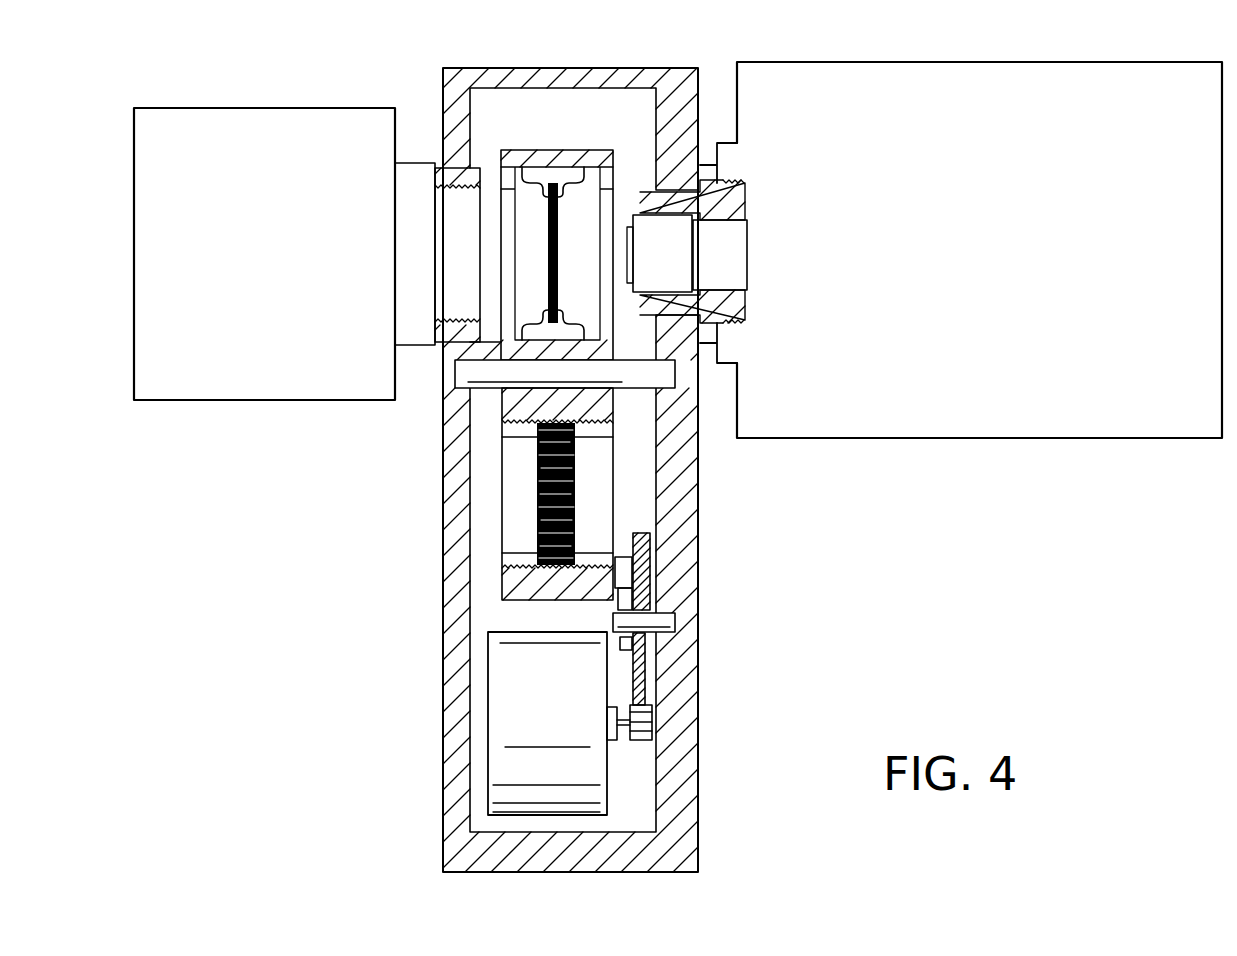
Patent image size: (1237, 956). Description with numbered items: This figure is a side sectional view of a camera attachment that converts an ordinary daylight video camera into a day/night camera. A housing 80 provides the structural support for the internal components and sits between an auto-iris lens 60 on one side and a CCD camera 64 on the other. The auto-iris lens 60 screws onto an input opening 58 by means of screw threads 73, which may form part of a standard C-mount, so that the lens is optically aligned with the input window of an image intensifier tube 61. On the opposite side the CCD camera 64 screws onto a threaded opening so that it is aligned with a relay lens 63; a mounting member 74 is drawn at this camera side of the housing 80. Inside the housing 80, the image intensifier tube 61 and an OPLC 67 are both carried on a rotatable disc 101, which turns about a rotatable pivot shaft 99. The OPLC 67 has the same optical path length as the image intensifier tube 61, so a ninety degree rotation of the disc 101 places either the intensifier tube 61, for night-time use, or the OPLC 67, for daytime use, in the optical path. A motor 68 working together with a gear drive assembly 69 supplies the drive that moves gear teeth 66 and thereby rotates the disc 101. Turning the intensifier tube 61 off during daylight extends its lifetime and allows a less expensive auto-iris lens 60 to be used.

The input opening 58 is at (436, 271).
The auto-iris lens 60 is at (296, 108).
The image intensifier tube 61 is at (596, 185).
The relay lens 63 is at (626, 230).
The CCD camera 64 is at (896, 62).
The gear teeth 66 is at (615, 557).
The OPLC 67 is at (537, 515).
The motor 68 is at (607, 769).
The gear drive assembly 69 is at (627, 657).
The screw threads 73 is at (455, 186).
The camera mount 74 is at (750, 250).
The housing 80 is at (443, 741).
The rotatable pivot shaft 99 is at (480, 397).
The rotatable disc 101 is at (553, 166).